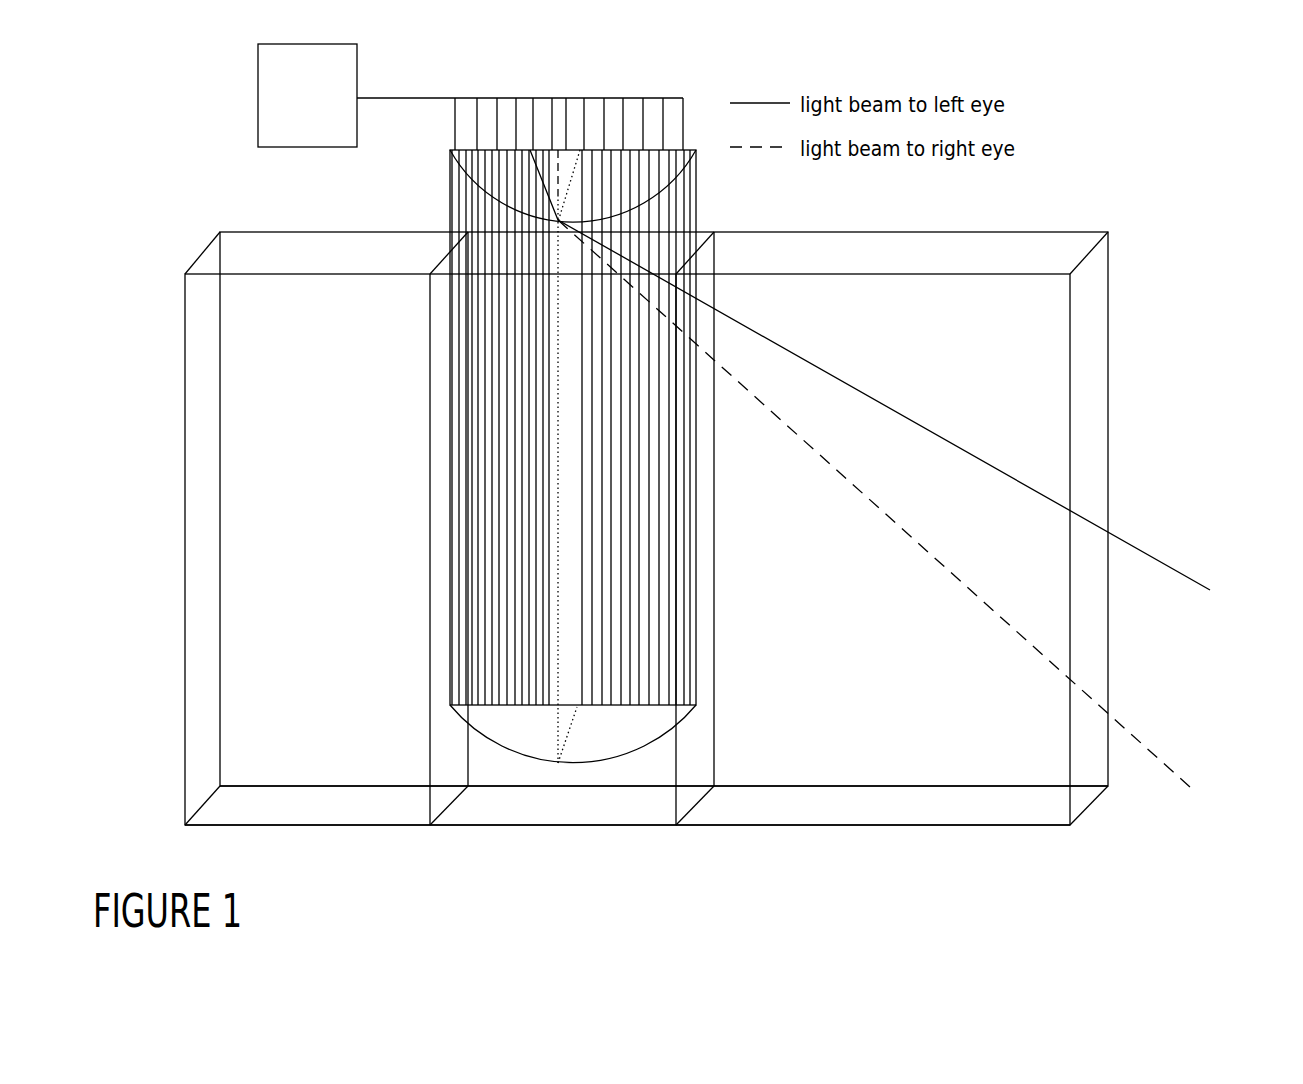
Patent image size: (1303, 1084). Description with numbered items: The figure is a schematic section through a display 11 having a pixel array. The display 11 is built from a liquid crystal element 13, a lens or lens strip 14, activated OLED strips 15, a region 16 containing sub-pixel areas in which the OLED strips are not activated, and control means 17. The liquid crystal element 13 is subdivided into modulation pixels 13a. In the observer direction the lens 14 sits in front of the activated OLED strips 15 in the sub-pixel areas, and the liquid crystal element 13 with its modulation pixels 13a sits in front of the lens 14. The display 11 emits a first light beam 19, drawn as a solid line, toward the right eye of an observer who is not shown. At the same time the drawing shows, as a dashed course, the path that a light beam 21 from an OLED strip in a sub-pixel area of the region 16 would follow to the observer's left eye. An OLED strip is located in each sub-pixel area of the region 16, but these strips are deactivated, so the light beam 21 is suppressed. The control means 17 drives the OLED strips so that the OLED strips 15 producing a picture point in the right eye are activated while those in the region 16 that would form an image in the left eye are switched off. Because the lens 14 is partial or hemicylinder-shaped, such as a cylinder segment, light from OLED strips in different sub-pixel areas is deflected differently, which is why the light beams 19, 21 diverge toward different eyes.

The display 11 is at (1128, 306).
The liquid crystal element 13 is at (990, 830).
The modulation pixels 13a is at (475, 803).
The lens 14 is at (525, 742).
The activated OLED strips 15 is at (588, 697).
The region having sub-pixel areas 16 is at (550, 697).
The control means 17 is at (272, 121).
The first light beam 19 is at (1187, 577).
The light beam 21 is at (1145, 742).